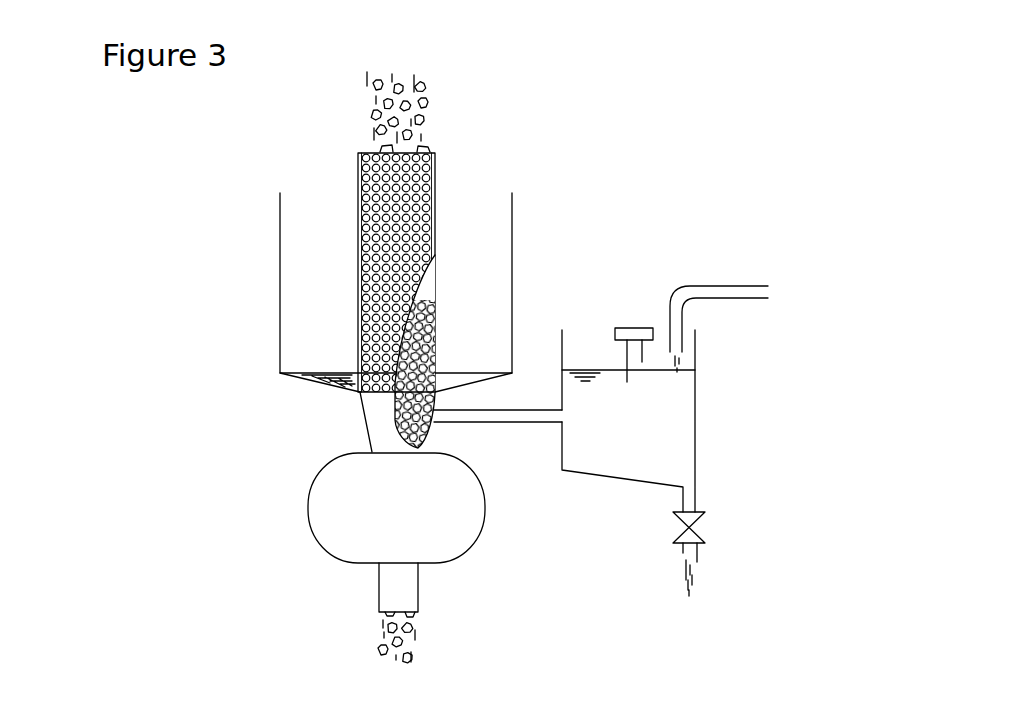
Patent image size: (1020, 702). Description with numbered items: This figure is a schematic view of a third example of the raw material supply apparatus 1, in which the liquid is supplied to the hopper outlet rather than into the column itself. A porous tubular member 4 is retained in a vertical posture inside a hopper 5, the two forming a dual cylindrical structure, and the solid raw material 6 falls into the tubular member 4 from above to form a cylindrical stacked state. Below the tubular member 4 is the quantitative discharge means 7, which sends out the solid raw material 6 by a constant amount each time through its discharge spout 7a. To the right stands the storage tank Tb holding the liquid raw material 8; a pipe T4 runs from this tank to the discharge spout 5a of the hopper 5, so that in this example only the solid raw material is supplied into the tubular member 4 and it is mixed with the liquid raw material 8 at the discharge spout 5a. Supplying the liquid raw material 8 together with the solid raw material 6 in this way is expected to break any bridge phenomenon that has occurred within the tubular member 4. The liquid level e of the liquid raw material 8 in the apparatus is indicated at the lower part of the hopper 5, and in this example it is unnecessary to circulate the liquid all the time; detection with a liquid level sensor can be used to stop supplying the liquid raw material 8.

The raw material supply apparatus 1 is at (513, 240).
The tubular member 4 is at (358, 207).
The hopper 5 is at (278, 255).
The discharge spout 5a is at (367, 423).
The solid raw material 6 is at (428, 102).
The quantitative discharge means 7 is at (310, 520).
The discharge spout of quantitative discharge means 7a is at (418, 587).
The liquid raw material 8 is at (460, 370).
The liquid level e is at (327, 375).
The pipe T4 is at (503, 423).
The storage tank Tb is at (697, 413).